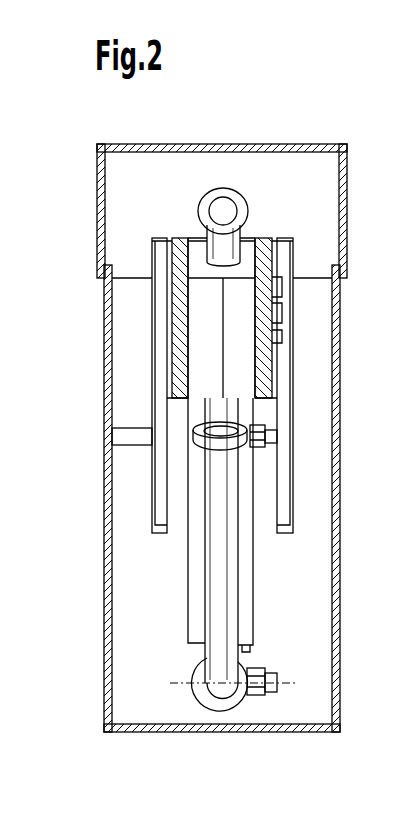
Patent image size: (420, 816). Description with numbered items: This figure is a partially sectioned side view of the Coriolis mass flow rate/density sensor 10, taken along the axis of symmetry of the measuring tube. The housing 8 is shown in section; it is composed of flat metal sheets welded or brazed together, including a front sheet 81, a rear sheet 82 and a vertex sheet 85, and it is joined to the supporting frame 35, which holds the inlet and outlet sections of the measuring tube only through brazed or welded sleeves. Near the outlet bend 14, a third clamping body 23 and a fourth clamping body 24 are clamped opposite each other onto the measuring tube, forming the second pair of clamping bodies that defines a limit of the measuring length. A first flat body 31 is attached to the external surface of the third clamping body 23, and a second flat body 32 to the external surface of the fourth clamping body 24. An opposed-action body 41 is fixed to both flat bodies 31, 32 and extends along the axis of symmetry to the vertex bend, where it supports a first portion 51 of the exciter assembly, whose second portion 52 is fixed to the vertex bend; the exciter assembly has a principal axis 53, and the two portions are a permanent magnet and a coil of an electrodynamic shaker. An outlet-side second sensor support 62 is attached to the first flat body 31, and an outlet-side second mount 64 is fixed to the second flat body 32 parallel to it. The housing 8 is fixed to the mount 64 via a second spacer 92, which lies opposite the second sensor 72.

The housing 8 is at (228, 449).
The Coriolis mass flow rate/density sensor 10 is at (233, 123).
The outlet bend 14 is at (210, 236).
The third clamping body 23 is at (217, 329).
The fourth clamping body 24 is at (205, 352).
The first flat body 31 is at (276, 301).
The second flat body 32 is at (180, 327).
The supporting frame 35 is at (284, 150).
The opposed-action body 41 is at (195, 598).
The first portion of exciter assembly 51 is at (218, 702).
The second portion of exciter assembly 52 is at (257, 696).
The principal axis 53 is at (178, 683).
The second sensor support 62 is at (283, 511).
The second mount 64 is at (158, 505).
The second sensor 72 is at (277, 435).
The front sheet 81 is at (341, 672).
The rear sheet 82 is at (105, 672).
The vertex sheet 85 is at (319, 733).
The second spacer 92 is at (120, 441).